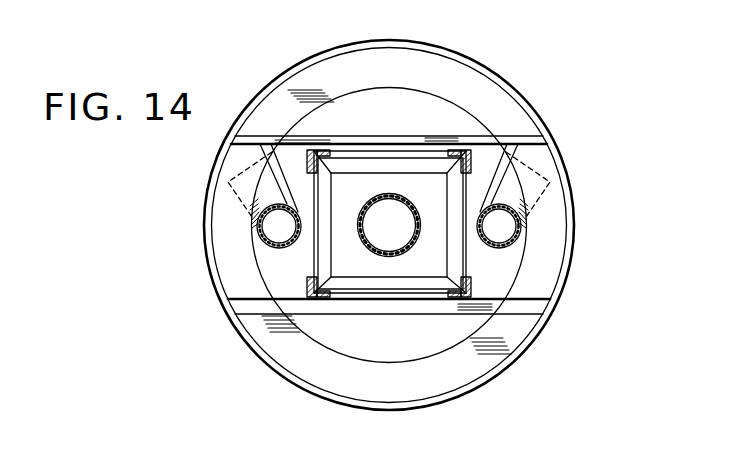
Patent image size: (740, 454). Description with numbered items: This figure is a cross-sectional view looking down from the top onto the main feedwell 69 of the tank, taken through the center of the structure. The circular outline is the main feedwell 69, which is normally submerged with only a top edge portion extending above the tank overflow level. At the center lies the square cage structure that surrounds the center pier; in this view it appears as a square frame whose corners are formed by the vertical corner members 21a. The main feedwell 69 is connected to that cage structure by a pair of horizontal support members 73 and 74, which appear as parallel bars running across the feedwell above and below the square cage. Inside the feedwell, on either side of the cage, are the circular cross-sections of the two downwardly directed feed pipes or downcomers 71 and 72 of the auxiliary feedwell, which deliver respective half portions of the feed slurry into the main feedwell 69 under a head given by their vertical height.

The main feedwell 69 is at (218, 292).
The horizontal support member 73 is at (383, 141).
The horizontal support member 74 is at (385, 315).
The vertical corner members 21a is at (464, 152).
The downcomer 71 is at (263, 246).
The downcomer 72 is at (509, 243).